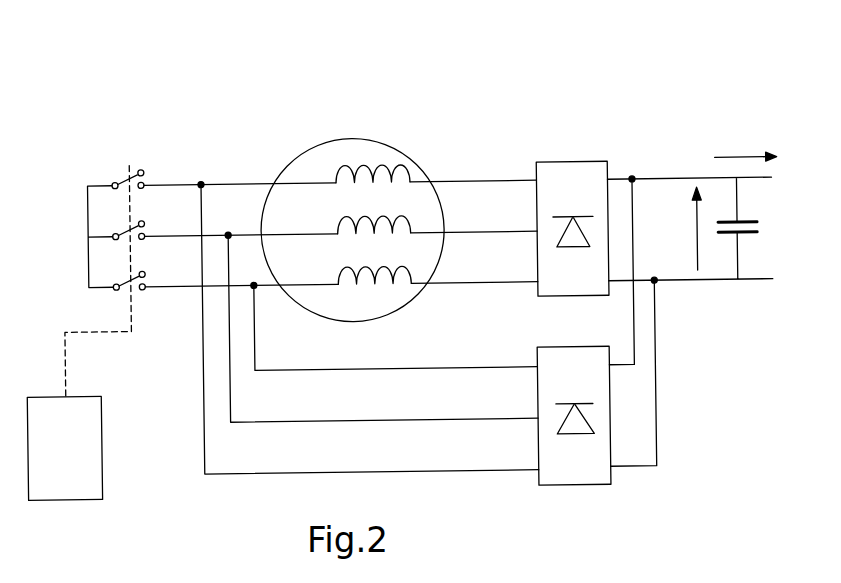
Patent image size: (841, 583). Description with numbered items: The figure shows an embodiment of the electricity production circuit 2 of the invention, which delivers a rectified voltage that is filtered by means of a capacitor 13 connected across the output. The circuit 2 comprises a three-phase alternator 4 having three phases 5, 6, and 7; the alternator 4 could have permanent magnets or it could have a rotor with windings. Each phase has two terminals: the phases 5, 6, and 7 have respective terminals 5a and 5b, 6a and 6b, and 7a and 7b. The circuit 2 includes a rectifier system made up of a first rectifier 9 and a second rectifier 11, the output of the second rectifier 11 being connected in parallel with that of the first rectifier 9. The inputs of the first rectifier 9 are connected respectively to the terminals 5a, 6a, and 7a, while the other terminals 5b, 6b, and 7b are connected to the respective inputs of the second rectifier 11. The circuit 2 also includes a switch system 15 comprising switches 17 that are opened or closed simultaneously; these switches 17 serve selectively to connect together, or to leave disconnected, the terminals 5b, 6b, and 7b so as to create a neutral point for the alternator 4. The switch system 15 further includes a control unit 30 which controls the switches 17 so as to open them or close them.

The electricity production circuit 2 is at (141, 106).
The three-phase alternator 4 is at (314, 145).
The phase 5 is at (380, 168).
The phase 6 is at (402, 218).
The phase 7 is at (401, 268).
The terminal 5a is at (480, 185).
The terminal 6a is at (472, 236).
The terminal 7a is at (460, 287).
The terminal 5b is at (257, 184).
The terminal 6b is at (240, 233).
The terminal 7b is at (240, 288).
The first rectifier 9 is at (578, 176).
The second rectifier 11 is at (546, 360).
The capacitor 13 is at (729, 245).
The switch system 15 is at (104, 171).
The switches 17 is at (129, 179).
The control unit 30 is at (86, 441).